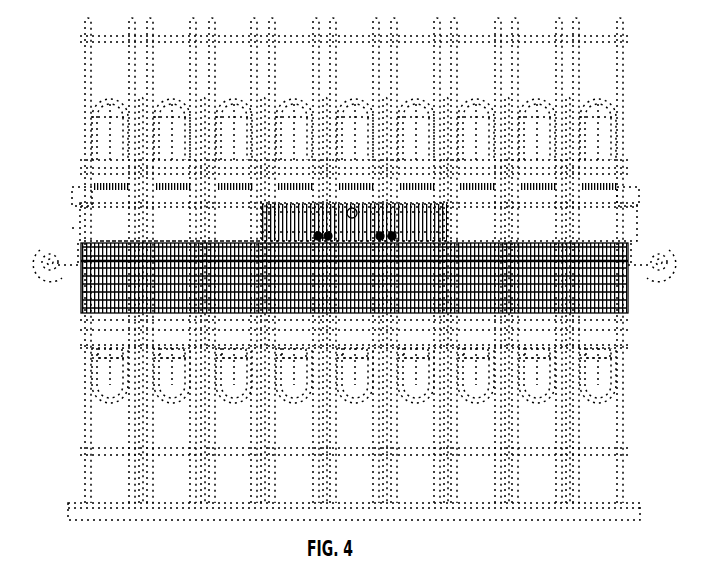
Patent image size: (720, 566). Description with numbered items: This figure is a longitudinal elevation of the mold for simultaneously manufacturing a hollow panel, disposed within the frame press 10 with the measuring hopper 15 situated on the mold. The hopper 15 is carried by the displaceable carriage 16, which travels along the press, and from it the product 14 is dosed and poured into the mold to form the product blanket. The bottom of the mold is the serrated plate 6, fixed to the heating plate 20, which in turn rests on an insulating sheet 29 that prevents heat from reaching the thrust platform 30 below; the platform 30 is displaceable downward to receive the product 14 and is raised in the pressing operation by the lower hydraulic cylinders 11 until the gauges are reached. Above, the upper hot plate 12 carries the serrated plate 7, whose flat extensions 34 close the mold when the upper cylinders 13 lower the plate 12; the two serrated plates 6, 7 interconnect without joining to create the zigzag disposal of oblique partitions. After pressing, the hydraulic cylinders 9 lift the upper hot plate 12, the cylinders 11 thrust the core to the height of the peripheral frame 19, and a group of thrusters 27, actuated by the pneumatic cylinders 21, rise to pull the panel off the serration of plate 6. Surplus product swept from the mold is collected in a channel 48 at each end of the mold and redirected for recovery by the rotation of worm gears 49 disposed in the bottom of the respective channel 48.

The serrated plate 6 is at (507, 247).
The serrated plate 7 is at (72, 222).
The hydraulic cylinders 9 is at (204, 99).
The frame press 10 is at (622, 85).
The lower hydraulic cylinders 11 is at (165, 398).
The upper hot plate 12 is at (598, 198).
The upper cylinders 13 is at (168, 100).
The product 14 is at (195, 243).
The measuring hopper 15 is at (451, 217).
The displaceable carriage 16 is at (441, 235).
The peripheral frame 19 is at (77, 247).
The heating plate 20 is at (556, 250).
The pneumatic cylinders 21 is at (530, 353).
The thrusters 27 is at (144, 242).
The insulating sheet 29 is at (103, 257).
The thrust platform 30 is at (102, 294).
The flat extensions 34 is at (86, 209).
The channel 48 is at (36, 266).
The worm gears 49 is at (50, 254).